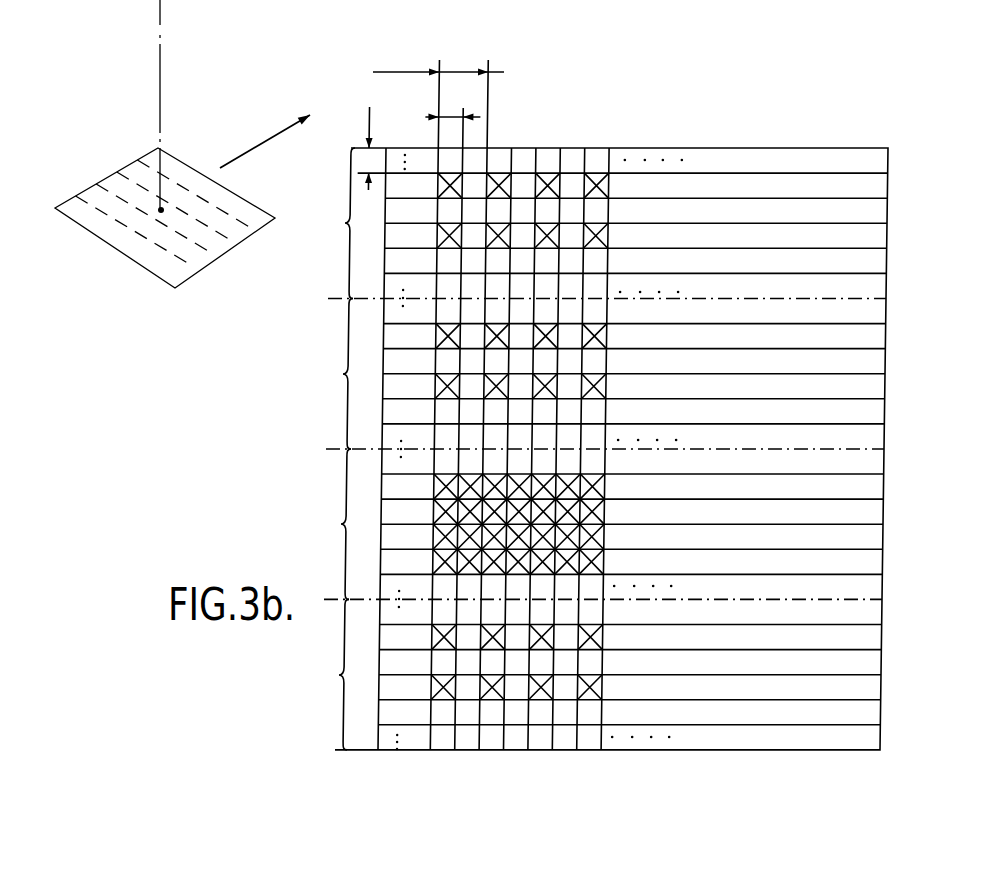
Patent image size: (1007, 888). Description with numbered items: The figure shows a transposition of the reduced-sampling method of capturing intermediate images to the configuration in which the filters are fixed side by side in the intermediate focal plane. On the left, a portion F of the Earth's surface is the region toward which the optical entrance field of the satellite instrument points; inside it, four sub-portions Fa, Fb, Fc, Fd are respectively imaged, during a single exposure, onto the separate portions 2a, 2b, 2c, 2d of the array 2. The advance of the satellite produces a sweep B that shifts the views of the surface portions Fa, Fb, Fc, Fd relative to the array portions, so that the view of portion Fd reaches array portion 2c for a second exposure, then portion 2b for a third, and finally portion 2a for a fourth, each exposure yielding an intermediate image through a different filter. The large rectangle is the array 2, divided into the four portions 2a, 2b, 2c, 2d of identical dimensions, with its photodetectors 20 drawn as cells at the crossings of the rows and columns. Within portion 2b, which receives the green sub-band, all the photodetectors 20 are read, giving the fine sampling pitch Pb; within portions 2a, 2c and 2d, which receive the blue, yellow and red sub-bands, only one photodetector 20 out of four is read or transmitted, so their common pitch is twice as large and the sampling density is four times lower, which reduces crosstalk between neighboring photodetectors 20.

The array 2 is at (752, 148).
The photodetectors 20 is at (597, 185).
The portion of the array 2a is at (592, 674).
The portion of the array 2b is at (596, 524).
The portion of the array 2c is at (596, 374).
The portion of the array 2d is at (602, 223).
The portion of the Earth's surface F is at (123, 253).
The portion of the Earth's surface Fa is at (148, 163).
The portion of the Earth's surface Fb is at (127, 175).
The portion of the Earth's surface Fc is at (105, 187).
The portion of the Earth's surface Fd is at (82, 200).
The sweep B is at (265, 128).
The sampling pitch for the color green Pb is at (418, 137).